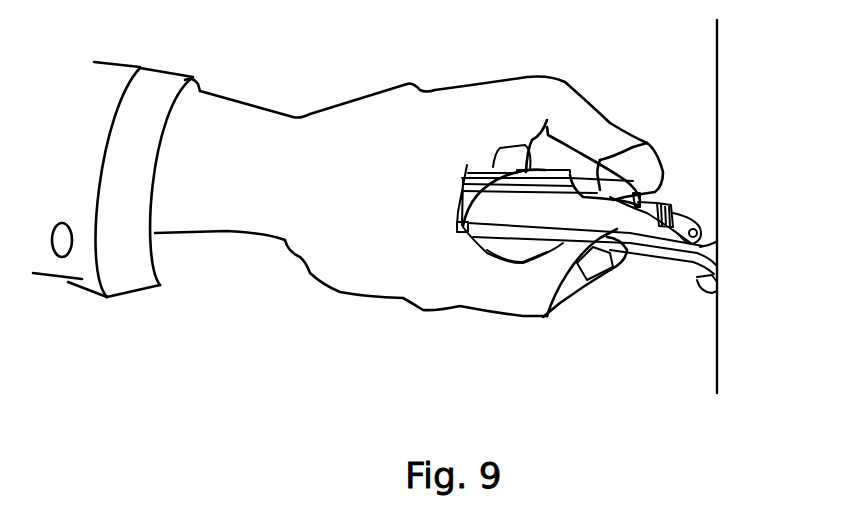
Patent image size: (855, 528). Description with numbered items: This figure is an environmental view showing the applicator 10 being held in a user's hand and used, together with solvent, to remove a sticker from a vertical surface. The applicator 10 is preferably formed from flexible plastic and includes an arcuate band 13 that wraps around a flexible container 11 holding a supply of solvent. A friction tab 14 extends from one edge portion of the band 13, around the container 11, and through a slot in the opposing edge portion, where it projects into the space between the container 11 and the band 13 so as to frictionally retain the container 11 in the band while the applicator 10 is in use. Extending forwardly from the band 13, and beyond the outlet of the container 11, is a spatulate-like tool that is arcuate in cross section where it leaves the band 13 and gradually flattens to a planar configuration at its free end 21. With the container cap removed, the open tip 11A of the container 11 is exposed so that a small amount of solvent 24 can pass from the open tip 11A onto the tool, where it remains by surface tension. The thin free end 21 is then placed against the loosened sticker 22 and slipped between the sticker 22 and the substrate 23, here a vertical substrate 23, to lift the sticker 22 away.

The applicator 10 is at (627, 284).
The container 11 is at (647, 142).
The open tip of container 11A is at (698, 230).
The arcuate band 13 is at (547, 314).
The friction tab 14 is at (526, 177).
The free end of tool 21 is at (700, 247).
The sticker 22 is at (702, 283).
The substrate 23 is at (712, 335).
The solvent 24 is at (719, 235).